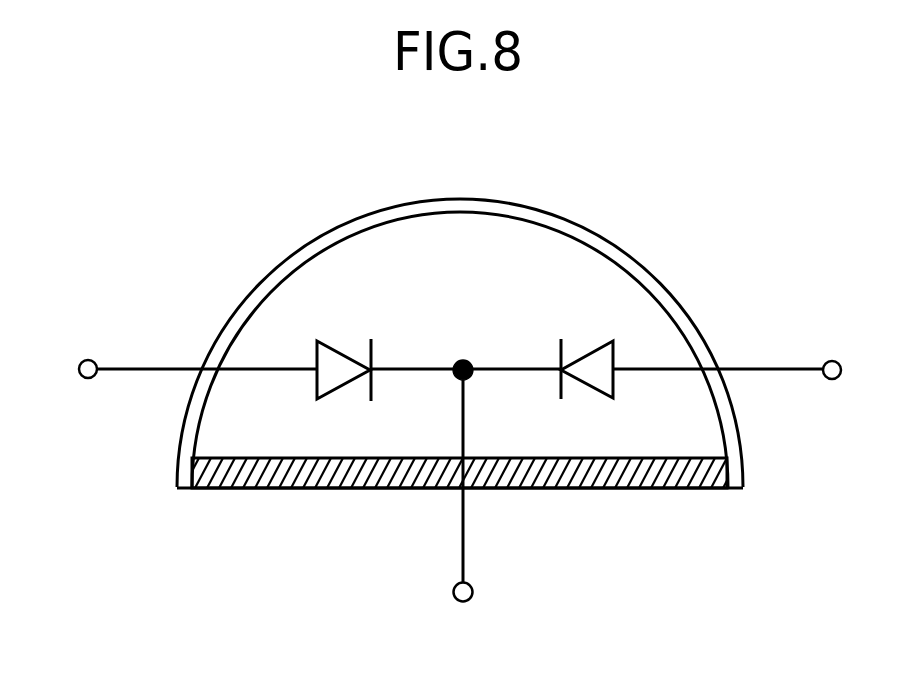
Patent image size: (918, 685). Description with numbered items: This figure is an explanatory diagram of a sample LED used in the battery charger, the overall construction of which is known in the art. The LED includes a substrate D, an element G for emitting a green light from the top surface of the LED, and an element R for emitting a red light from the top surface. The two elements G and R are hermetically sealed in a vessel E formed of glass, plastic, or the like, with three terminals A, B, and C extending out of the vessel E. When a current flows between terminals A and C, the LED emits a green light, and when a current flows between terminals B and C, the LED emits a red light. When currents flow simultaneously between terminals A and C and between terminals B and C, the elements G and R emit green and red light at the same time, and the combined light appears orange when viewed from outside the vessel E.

The terminal A is at (182, 369).
The terminal B is at (742, 370).
The terminal C is at (463, 502).
The substrate D is at (646, 490).
The vessel E is at (469, 200).
The element for emitting a green light G is at (340, 345).
The element for emitting a red light R is at (594, 350).